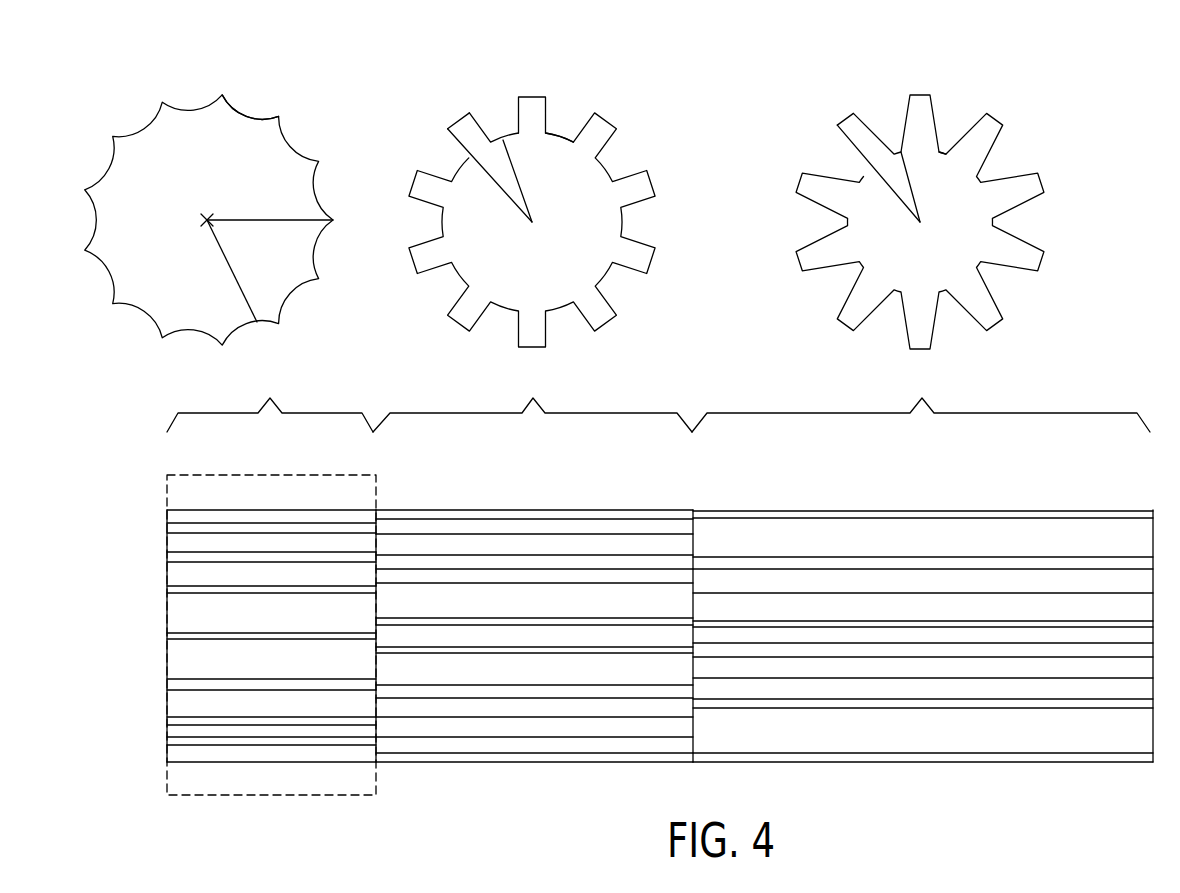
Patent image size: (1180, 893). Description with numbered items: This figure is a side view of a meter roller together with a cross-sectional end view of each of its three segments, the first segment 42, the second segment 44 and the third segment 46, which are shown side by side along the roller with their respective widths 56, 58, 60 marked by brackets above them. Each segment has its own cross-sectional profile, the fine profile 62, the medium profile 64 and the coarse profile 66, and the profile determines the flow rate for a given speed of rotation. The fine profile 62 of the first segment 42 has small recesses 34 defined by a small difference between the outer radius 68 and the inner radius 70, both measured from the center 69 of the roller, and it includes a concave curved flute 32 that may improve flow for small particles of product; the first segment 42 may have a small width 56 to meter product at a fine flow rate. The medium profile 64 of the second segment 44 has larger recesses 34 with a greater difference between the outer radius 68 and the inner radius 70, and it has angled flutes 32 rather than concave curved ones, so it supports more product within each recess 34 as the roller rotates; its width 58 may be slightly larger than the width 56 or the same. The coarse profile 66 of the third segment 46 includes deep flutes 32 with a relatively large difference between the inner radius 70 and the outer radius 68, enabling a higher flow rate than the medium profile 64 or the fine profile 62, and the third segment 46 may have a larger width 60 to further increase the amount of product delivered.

The flute 32 is at (186, 102).
The recess 34 is at (207, 78).
The first segment 42 is at (265, 818).
The second segment 44 is at (505, 782).
The third segment 46 is at (921, 796).
The width 56 is at (270, 397).
The width 58 is at (532, 397).
The width 60 is at (921, 397).
The fine profile 62 is at (253, 115).
The medium profile 64 is at (562, 133).
The coarse profile 66 is at (947, 150).
The outer radius 68 is at (270, 220).
The center 69 is at (206, 216).
The inner radius 70 is at (230, 276).